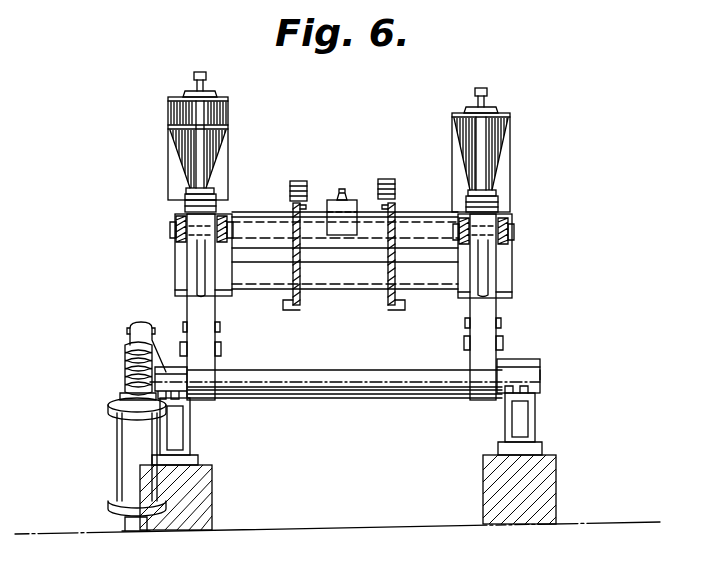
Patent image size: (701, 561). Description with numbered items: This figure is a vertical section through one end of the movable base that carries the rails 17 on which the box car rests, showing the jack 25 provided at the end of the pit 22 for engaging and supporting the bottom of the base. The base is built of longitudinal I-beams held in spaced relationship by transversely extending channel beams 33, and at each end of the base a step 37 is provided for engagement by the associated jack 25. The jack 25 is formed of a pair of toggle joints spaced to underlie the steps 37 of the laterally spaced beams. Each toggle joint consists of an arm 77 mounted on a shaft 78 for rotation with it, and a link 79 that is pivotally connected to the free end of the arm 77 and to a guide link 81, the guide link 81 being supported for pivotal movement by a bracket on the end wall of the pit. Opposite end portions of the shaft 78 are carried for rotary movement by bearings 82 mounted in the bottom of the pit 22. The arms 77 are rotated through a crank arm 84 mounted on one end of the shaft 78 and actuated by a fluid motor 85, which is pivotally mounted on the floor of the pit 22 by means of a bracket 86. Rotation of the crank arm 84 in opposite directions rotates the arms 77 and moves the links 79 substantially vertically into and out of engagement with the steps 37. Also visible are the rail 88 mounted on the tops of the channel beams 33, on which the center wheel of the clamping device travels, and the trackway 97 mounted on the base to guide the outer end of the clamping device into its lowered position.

The rails 17 is at (195, 70).
The pit 22 is at (304, 527).
The jack 25 is at (513, 310).
The channel beams 33 is at (416, 212).
The step 37 is at (186, 203).
The arm 77 is at (212, 406).
The shaft 78 is at (310, 398).
The link 79 is at (220, 312).
The guide link 81 is at (175, 234).
The bearings 82 is at (168, 367).
The crank arm 84 is at (131, 361).
The fluid motor 85 is at (120, 456).
The bracket 86 is at (124, 522).
The rail 88 is at (342, 189).
The trackway 97 is at (300, 172).